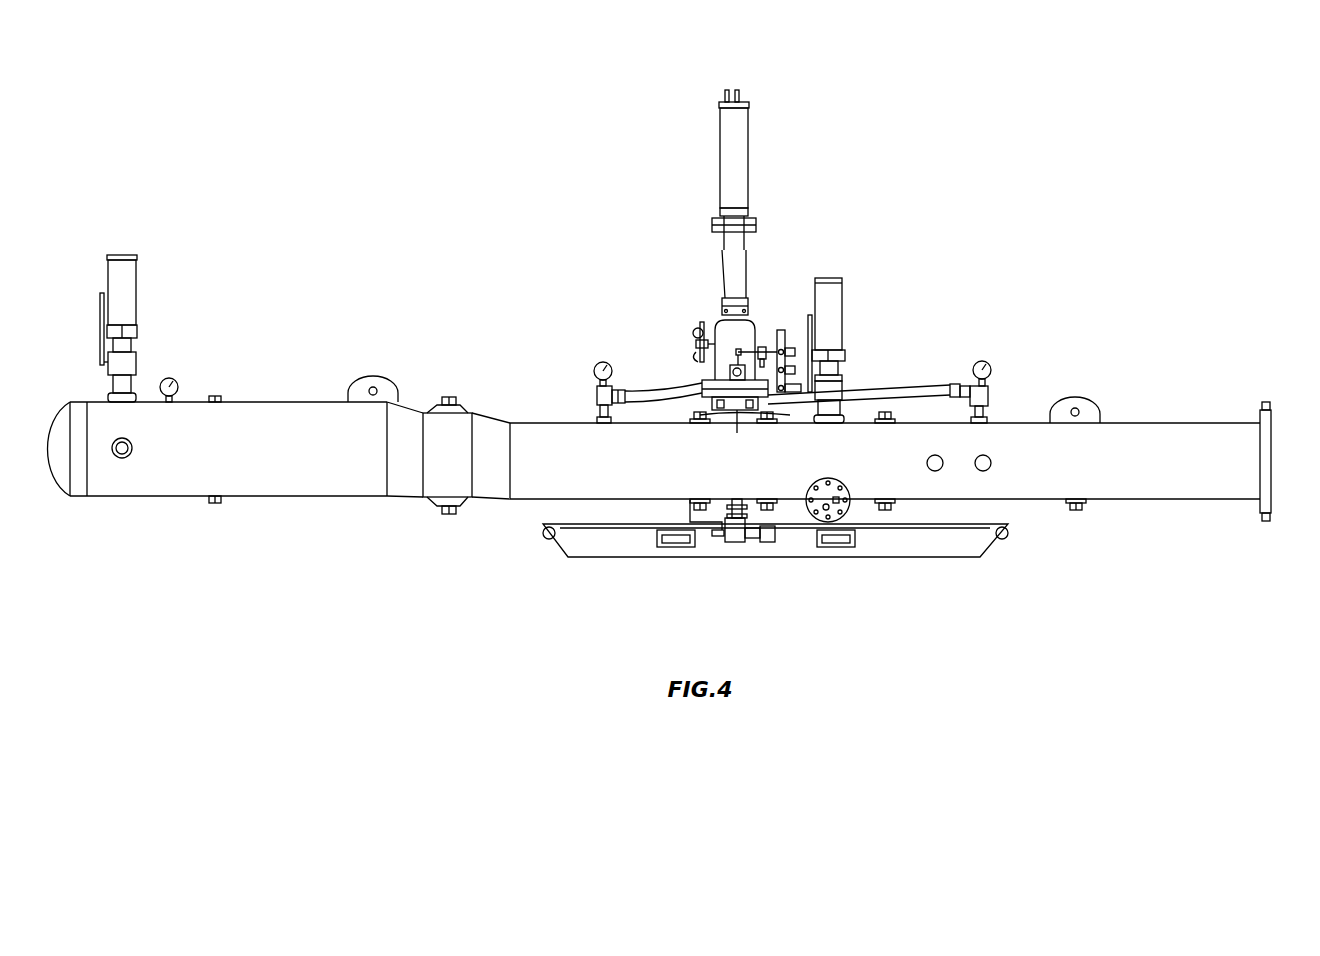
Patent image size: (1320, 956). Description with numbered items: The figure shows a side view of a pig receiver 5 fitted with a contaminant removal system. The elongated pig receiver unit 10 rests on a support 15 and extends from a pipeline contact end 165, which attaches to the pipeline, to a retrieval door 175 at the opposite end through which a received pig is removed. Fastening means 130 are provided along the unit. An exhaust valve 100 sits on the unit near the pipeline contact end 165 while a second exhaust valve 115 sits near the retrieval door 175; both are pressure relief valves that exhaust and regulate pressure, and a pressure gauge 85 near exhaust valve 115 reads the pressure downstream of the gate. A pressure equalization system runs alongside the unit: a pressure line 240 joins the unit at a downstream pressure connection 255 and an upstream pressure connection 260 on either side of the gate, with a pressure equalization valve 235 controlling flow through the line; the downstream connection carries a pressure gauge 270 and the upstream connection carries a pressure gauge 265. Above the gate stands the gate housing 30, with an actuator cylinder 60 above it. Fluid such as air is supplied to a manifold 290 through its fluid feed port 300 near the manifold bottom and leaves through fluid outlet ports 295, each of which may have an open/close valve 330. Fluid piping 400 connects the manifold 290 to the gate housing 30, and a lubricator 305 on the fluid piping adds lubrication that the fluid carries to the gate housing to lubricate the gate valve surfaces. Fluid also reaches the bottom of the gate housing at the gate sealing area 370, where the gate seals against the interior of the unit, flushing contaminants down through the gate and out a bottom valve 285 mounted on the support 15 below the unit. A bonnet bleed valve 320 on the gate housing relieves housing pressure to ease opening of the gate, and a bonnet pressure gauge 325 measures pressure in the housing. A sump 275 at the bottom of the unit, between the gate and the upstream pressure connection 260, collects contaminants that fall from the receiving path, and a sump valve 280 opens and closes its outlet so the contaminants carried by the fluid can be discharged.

The pig receiver 5 is at (1068, 90).
The pig receiver unit 10 is at (1210, 423).
The support 15 is at (995, 550).
The gate housing 30 is at (750, 325).
The accumulator cylinder 60 is at (750, 100).
The pressure gauge 85 is at (170, 377).
The exhaust valve 100 is at (845, 292).
The exhaust valve 115 is at (140, 270).
The fastening means 130 is at (363, 380).
The pipeline contact end 165 is at (1272, 448).
The retrieval door 175 is at (58, 482).
The pressure equalization valve 235 is at (738, 434).
The pressure line 240 is at (944, 386).
The downstream pressure connection 255 is at (597, 412).
The upstream pressure connection 260 is at (990, 418).
The pressure gauge 265 is at (990, 368).
The pressure gauge 270 is at (600, 362).
The sump 275 is at (840, 508).
The sump valve 280 is at (822, 512).
The bottom valve 285 is at (765, 542).
The manifold 290 is at (790, 400).
The fluid outlet port 295 is at (797, 350).
The fluid feed port 300 is at (803, 387).
The lubricator 305 is at (772, 345).
The bonnet bleed valve 320 is at (703, 330).
The bonnet pressure gauge 325 is at (695, 340).
The open/close valve 330 is at (703, 379).
The gate sealing area 370 is at (700, 397).
The fluid piping 400 is at (738, 312).